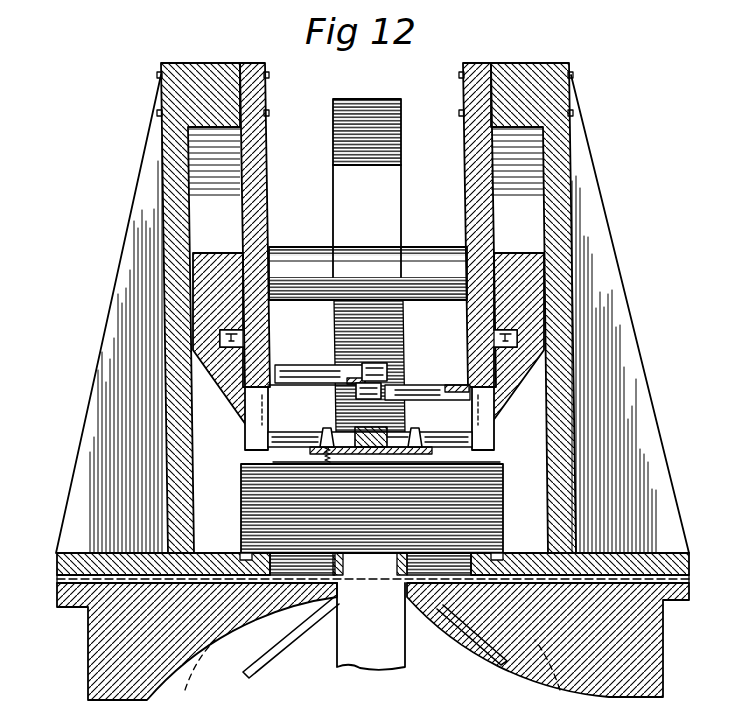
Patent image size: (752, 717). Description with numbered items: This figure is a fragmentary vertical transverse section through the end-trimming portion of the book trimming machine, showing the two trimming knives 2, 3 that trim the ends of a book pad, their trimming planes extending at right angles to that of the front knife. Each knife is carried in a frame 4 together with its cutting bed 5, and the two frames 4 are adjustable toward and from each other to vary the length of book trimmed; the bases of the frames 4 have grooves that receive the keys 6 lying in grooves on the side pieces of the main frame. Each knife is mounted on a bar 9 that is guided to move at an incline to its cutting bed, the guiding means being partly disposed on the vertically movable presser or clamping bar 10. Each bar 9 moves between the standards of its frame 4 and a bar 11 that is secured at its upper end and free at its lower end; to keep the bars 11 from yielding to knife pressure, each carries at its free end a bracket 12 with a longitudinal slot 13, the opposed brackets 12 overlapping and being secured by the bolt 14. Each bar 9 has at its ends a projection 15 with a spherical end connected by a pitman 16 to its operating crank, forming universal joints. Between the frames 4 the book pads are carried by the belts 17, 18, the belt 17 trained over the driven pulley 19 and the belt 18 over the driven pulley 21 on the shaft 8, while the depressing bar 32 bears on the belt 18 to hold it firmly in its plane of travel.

The trimming knife 2 is at (245, 397).
The trimming knife 3 is at (494, 393).
The frame 4 is at (173, 93).
The cutting bed 5 is at (243, 556).
The key 6 is at (57, 580).
The shaft 8 is at (415, 262).
The bar 9 is at (193, 290).
The presser or clamping bar 10 is at (494, 448).
The bar 11 is at (262, 320).
The bracket 12 is at (447, 372).
The longitudinal slot 13 is at (355, 387).
The bolt 14 is at (340, 362).
The projection 15 is at (424, 422).
The pitman 16 is at (314, 463).
The belt 17 is at (416, 456).
The belt 18 is at (396, 115).
The driven pulley 19 is at (380, 668).
The driven pulley 21 is at (393, 216).
The depressing bar 32 is at (372, 466).